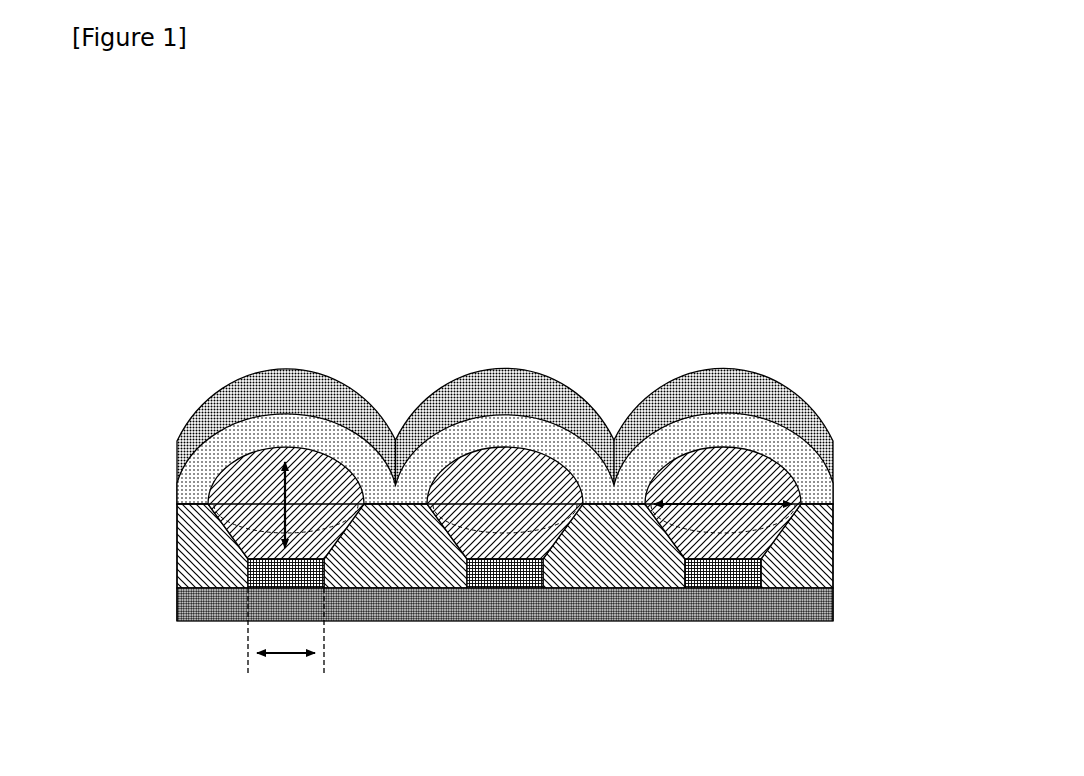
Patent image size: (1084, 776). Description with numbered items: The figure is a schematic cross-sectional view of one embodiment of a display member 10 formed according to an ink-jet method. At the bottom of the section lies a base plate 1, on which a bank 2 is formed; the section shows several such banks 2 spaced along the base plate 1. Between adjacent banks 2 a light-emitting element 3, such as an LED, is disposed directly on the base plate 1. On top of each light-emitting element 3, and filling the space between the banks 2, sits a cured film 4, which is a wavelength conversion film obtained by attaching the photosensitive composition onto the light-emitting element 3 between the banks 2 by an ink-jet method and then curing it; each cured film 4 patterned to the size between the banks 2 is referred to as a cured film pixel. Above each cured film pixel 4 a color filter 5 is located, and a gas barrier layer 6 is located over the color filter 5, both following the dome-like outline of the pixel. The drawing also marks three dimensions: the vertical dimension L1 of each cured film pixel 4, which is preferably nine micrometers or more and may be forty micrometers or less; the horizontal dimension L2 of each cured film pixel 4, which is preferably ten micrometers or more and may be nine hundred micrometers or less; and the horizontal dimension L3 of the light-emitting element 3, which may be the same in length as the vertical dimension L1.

The base plate 1 is at (833, 605).
The bank 2 is at (608, 560).
The light-emitting element 3 is at (503, 590).
The cured film 4 is at (536, 482).
The color filter 5 is at (437, 450).
The gas barrier layer 6 is at (321, 391).
The display member 10 is at (486, 437).
The vertical dimension L1 is at (262, 530).
The horizontal dimension L2 is at (735, 497).
The horizontal dimension of the light-emitting element L3 is at (285, 656).